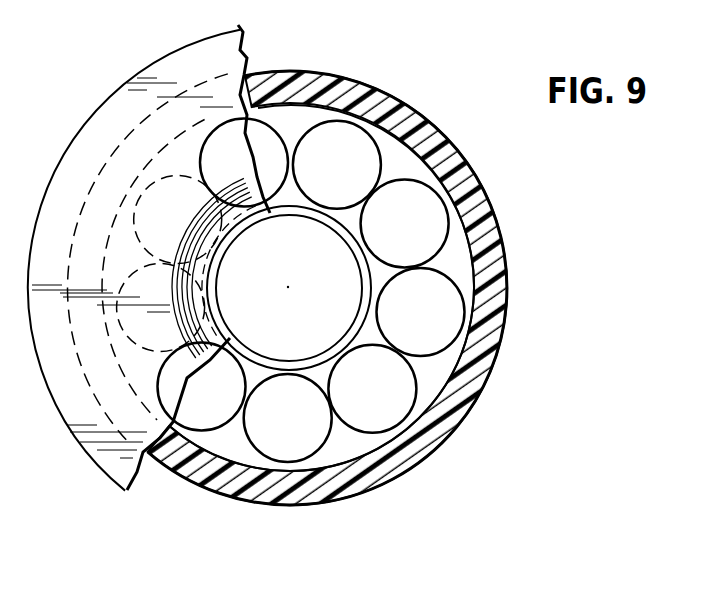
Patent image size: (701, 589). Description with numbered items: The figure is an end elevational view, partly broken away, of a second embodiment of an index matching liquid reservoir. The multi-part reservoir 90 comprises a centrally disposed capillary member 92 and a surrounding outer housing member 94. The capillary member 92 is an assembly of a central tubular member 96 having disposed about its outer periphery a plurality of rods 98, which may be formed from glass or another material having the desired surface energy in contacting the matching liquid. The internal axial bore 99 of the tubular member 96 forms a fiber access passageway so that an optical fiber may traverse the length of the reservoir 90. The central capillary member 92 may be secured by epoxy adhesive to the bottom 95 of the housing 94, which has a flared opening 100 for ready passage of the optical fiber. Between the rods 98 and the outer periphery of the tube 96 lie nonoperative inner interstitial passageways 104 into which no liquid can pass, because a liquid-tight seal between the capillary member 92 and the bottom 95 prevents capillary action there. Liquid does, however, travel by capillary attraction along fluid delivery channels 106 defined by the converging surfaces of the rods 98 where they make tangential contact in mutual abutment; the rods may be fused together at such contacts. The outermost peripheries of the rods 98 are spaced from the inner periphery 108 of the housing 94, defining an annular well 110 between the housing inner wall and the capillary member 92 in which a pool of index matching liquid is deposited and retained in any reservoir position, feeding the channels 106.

The multi-part reservoir 90 is at (500, 210).
The capillary member 92 is at (326, 450).
The outer housing member 94 is at (403, 470).
The bottom of the housing 95 is at (78, 400).
The central tubular member 96 is at (338, 227).
The rods 98 is at (352, 172).
The internal axial bore 99 is at (330, 322).
The flared opening 100 is at (220, 290).
The inner interstitial passageways 104 is at (368, 337).
The fluid delivery channels 106 is at (437, 257).
The inner periphery of the housing 108 is at (412, 156).
The annular well 110 is at (472, 291).